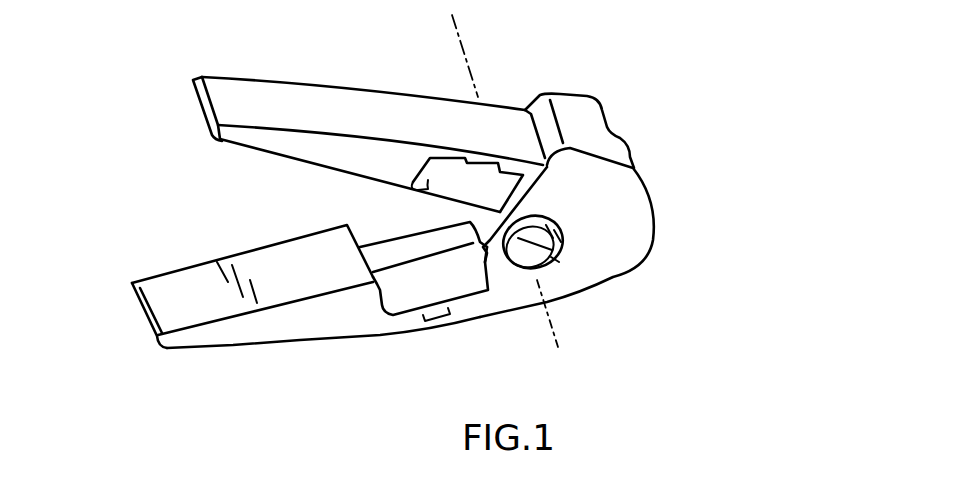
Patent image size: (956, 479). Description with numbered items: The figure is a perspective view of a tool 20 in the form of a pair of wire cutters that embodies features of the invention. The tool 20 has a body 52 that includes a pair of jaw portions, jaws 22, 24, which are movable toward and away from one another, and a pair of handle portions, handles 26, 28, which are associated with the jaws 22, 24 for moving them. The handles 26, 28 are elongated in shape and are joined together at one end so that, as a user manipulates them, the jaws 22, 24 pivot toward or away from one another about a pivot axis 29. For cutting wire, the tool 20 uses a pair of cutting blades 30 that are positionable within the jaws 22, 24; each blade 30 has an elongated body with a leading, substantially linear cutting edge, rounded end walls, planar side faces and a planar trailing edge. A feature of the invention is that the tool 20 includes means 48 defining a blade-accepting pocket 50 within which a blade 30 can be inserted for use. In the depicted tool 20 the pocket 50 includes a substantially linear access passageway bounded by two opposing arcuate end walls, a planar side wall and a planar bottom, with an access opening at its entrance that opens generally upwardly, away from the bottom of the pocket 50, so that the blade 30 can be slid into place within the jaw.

The tool 20 is at (663, 130).
The jaw 22 is at (357, 100).
The jaw 24 is at (253, 263).
The handle 26 is at (252, 97).
The handle 28 is at (180, 272).
The pivot axis 29 is at (553, 327).
The cutting blade 30 is at (497, 188).
The means defining a blade-accepting pocket 48 is at (414, 77).
The blade-accepting pocket 50 is at (382, 300).
The body 52 is at (360, 158).